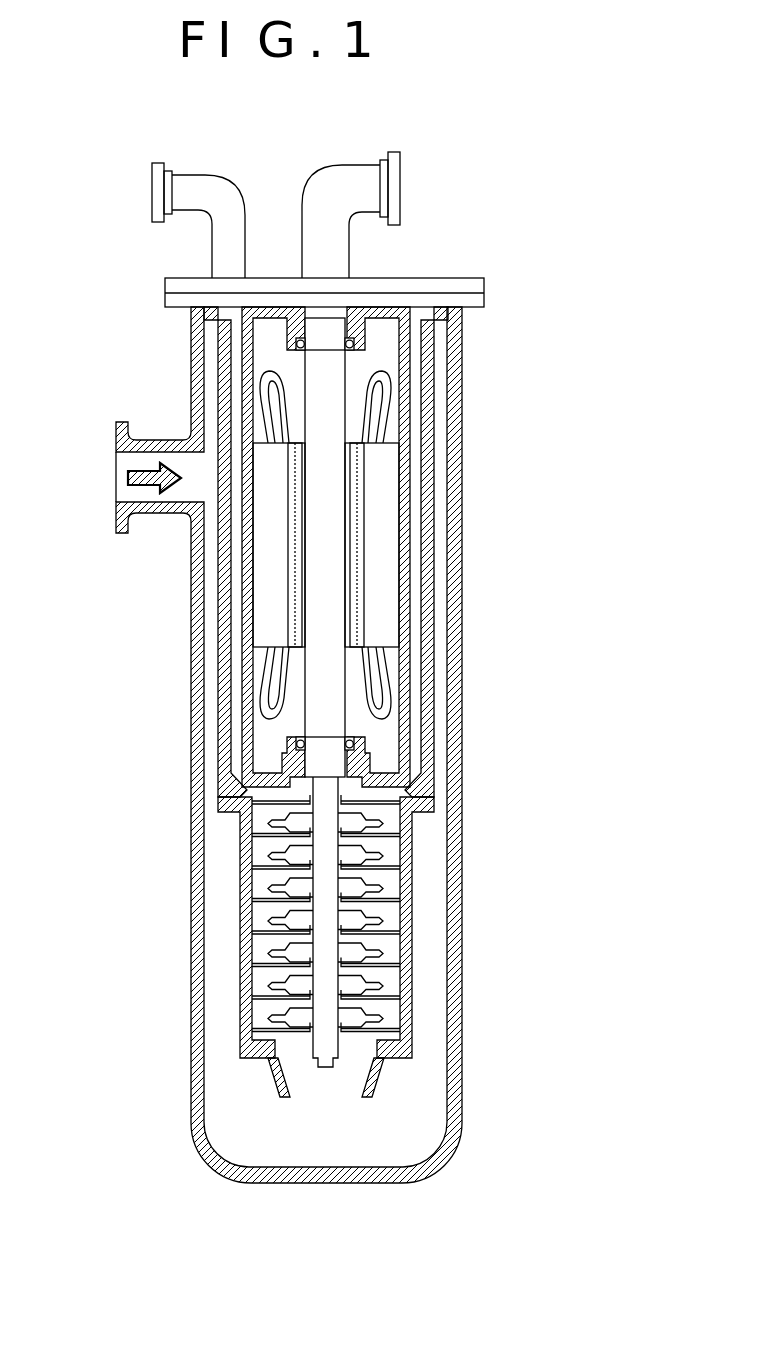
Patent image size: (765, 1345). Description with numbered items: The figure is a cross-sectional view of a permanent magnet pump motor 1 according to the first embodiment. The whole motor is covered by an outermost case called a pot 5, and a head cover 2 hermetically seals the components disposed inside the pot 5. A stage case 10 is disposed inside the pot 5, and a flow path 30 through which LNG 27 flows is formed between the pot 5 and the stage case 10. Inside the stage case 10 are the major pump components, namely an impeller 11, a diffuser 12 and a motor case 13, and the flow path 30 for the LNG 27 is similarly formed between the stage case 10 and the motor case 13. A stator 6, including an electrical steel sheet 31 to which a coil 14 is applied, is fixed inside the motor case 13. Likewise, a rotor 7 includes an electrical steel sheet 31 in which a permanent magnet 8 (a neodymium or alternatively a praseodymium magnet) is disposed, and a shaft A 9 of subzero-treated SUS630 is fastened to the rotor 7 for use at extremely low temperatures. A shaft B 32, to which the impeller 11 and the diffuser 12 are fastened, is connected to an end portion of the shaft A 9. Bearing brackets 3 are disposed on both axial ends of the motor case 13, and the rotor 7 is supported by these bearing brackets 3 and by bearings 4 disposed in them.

The permanent magnet pump motor 1 is at (146, 262).
The head cover 2 is at (468, 284).
The bearing bracket 3 is at (255, 317).
The bearing 4 is at (349, 345).
The pot 5 is at (192, 598).
The stator 6 is at (388, 360).
The rotor 7 is at (353, 712).
The permanent magnet 8 is at (358, 613).
The shaft A 9 is at (313, 713).
The stage case 10 is at (403, 926).
The impeller 11 is at (385, 977).
The diffuser 12 is at (257, 869).
The motor case 13 is at (428, 470).
The coil 14 is at (390, 388).
The LNG 27 is at (118, 478).
The flow path 30 is at (415, 690).
The electrical steel sheet 31 is at (350, 595).
The shaft B 32 is at (323, 1058).